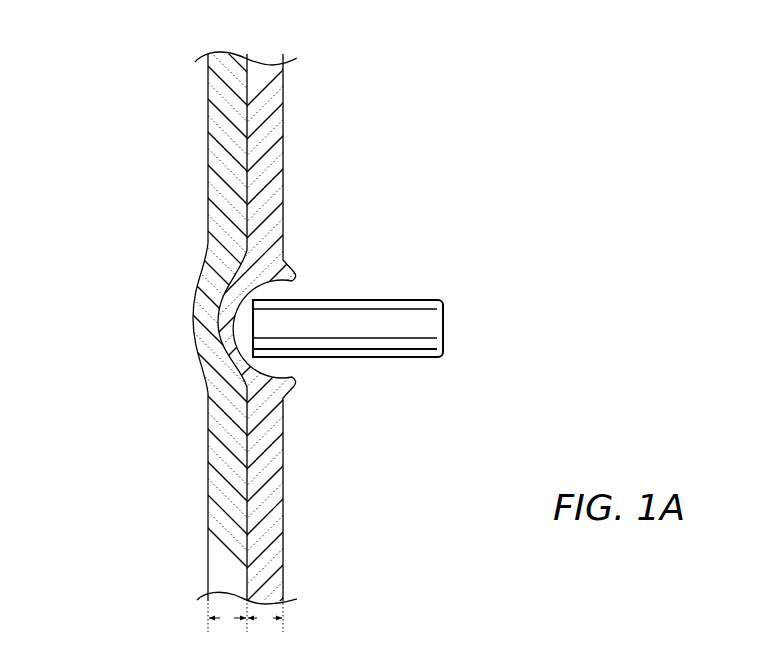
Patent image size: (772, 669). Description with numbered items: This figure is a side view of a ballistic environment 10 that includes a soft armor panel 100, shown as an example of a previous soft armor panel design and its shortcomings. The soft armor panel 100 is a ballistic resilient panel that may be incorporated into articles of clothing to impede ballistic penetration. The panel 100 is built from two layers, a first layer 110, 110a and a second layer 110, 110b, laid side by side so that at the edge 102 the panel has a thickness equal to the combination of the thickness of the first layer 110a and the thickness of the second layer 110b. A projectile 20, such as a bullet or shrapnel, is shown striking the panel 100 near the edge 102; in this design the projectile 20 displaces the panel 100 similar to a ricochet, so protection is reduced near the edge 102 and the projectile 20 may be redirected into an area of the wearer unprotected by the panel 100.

The ballistic environment 10 is at (519, 69).
The projectile 20 is at (379, 302).
The soft armor panel 100 is at (388, 549).
The edge 102 is at (154, 61).
The layer 110 is at (252, 334).
The first layer 110a is at (208, 120).
The second layer 110b is at (285, 143).